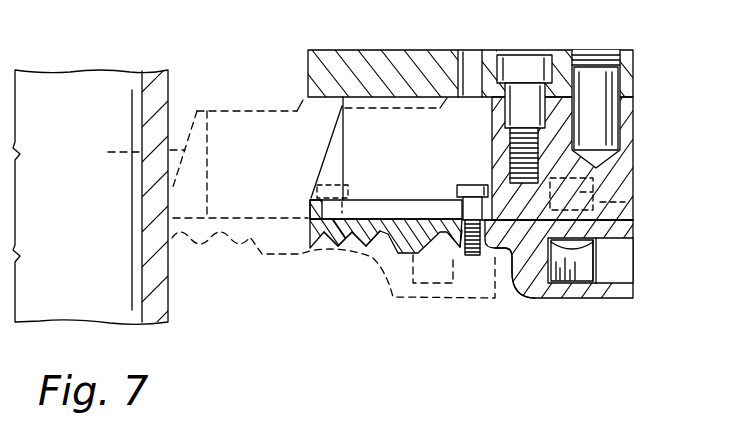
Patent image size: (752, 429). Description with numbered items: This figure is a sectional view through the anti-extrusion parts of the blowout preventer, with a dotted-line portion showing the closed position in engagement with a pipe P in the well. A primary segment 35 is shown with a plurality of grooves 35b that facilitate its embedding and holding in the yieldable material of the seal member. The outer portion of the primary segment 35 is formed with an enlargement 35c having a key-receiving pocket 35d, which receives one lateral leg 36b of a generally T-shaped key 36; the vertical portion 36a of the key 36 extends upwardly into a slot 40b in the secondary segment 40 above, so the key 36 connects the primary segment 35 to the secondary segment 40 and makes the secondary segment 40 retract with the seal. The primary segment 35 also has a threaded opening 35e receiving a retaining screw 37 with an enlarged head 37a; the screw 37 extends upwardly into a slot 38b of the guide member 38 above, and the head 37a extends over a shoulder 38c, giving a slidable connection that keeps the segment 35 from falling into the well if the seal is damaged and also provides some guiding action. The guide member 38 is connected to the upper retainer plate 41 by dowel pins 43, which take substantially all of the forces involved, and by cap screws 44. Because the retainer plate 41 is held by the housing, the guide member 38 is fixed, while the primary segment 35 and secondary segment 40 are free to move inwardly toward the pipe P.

The pipe P is at (155, 80).
The secondary segment 40 is at (333, 139).
The upper retainer plate 41 is at (332, 60).
The cap screw 44 is at (516, 66).
The dowel pin 43 is at (605, 78).
The key 36 is at (568, 278).
The vertical portion of key 36a is at (613, 185).
The lateral leg of key 36b is at (585, 257).
The slot 40b is at (626, 202).
The primary segment 35 is at (409, 265).
The groove 35b is at (382, 255).
The enlargement 35c is at (523, 300).
The key-receiving pocket 35d is at (591, 271).
The threaded opening 35e is at (462, 250).
The retaining screw 37 is at (373, 198).
The enlarged head 37a is at (470, 188).
The guide member 38 is at (310, 210).
The slot 38b is at (360, 208).
The shoulder 38c is at (407, 200).